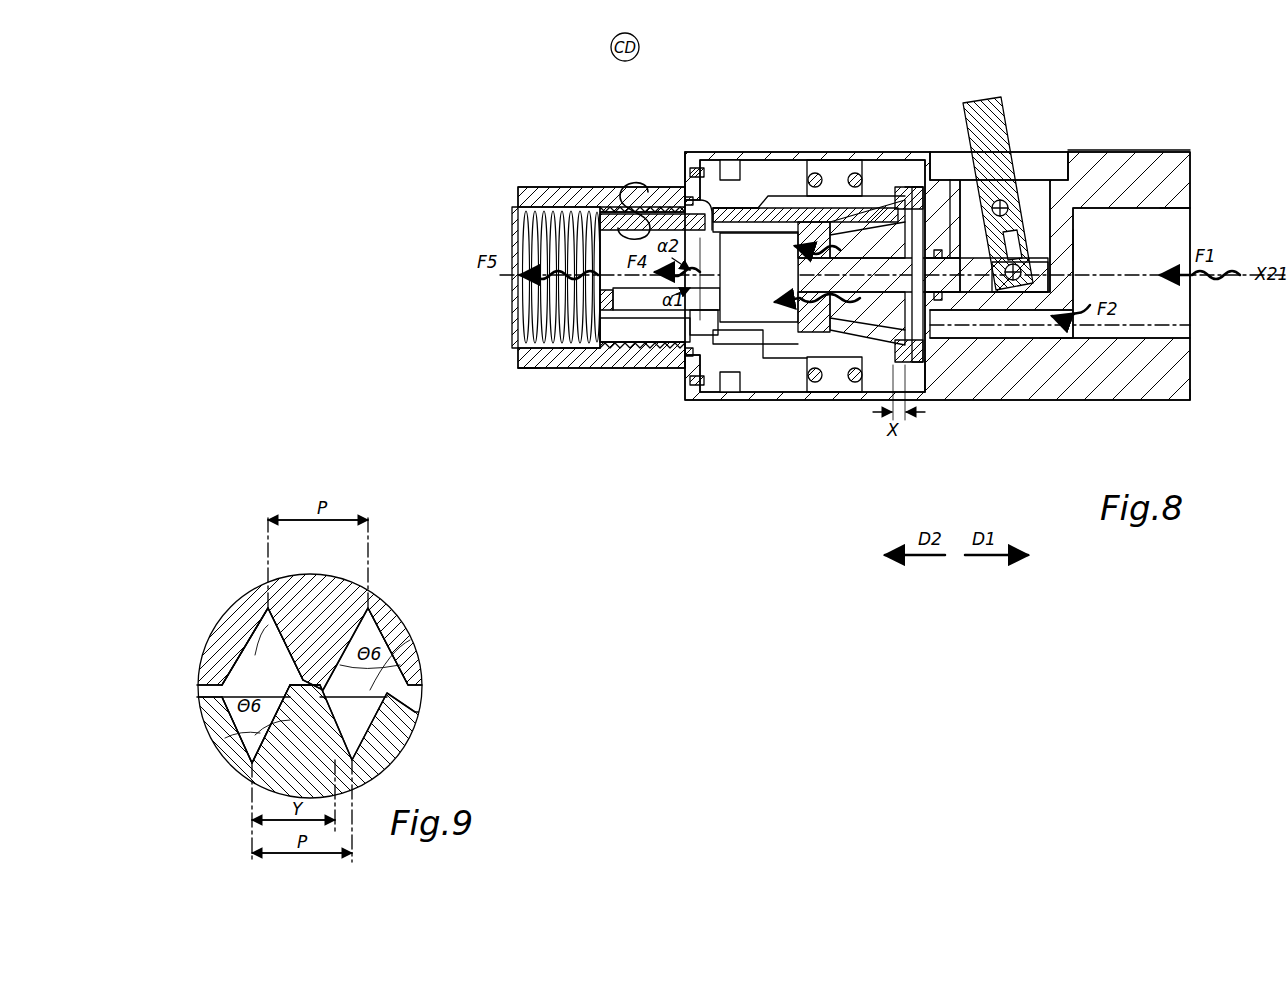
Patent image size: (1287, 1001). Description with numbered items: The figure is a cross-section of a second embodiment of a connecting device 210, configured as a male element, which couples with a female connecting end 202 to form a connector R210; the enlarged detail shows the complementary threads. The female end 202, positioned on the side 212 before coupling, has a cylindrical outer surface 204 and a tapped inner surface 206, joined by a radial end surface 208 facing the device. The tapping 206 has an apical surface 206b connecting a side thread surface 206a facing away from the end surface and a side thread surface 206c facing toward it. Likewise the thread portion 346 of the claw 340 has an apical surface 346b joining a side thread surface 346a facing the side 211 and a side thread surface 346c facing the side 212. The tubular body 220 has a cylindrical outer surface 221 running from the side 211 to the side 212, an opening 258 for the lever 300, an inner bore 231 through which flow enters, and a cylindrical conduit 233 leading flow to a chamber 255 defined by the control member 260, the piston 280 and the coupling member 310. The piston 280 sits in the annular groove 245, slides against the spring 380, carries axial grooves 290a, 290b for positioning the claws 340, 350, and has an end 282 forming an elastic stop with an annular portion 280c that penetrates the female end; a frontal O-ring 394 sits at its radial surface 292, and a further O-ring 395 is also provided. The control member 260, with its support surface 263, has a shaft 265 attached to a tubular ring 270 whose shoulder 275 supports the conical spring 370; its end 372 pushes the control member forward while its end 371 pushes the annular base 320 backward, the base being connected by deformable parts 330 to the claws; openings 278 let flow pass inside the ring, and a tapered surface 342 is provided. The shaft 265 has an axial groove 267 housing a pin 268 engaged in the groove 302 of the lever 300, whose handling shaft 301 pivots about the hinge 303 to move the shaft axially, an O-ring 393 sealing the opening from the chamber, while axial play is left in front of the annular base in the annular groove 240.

In FIG. 8, the female end 202 is at (478, 190).
In FIG. 9, the female end 202 is at (395, 612).
In FIG. 8, the cylindrical outer surface 204 is at (572, 372).
In FIG. 8, the tapped inner surface 206 is at (518, 330).
In FIG. 9, the tapped inner surface 206 is at (188, 655).
In FIG. 9, the side thread surface 206a is at (243, 632).
In FIG. 9, the apical surface 206b is at (392, 645).
In FIG. 9, the side thread surface 206c is at (240, 652).
In FIG. 8, the end surface 208 is at (690, 372).
In FIG. 8, the connecting device 210 is at (565, 110).
In FIG. 8, the connector R210 is at (450, 42).
In FIG. 8, the side 211 is at (1208, 418).
In FIG. 8, the side 212 is at (508, 376).
In FIG. 8, the tubular body 220 is at (1160, 150).
In FIG. 8, the cylindrical outer surface 221 is at (1112, 148).
In FIG. 8, the inner bore 231 is at (1172, 212).
In FIG. 8, the cylindrical conduit 233 is at (1046, 352).
In FIG. 8, the annular groove 240 is at (960, 300).
In FIG. 8, the annular groove 245 is at (733, 148).
In FIG. 8, the chamber 255 is at (948, 148).
In FIG. 8, the opening 258 is at (957, 148).
In FIG. 8, the control member 260 is at (970, 492).
In FIG. 8, the support surface 263 is at (765, 395).
In FIG. 8, the shaft 265 is at (925, 380).
In FIG. 8, the axial groove 267 is at (1073, 245).
In FIG. 8, the pin 268 is at (1080, 148).
In FIG. 8, the tubular ring 270 is at (790, 395).
In FIG. 8, the shoulder 275 is at (830, 392).
In FIG. 8, the openings 278 is at (875, 392).
In FIG. 8, the piston 280 is at (783, 150).
In FIG. 8, the annular portion 280c is at (612, 350).
In FIG. 8, the end 282 is at (650, 355).
In FIG. 8, the axial groove 290a is at (757, 150).
In FIG. 8, the axial groove 290b is at (600, 220).
In FIG. 8, the radial surface 292 is at (690, 178).
In FIG. 8, the lever 300 is at (1040, 149).
In FIG. 8, the handling shaft 301 is at (990, 110).
In FIG. 8, the groove 302 is at (1083, 148).
In FIG. 8, the hinge 303 is at (1052, 148).
In FIG. 8, the coupling member 310 is at (761, 107).
In FIG. 8, the annular base 320 is at (913, 150).
In FIG. 8, the deformable parts 330 is at (800, 150).
In FIG. 8, the claw 340 is at (678, 185).
In FIG. 9, the claw 340 is at (372, 740).
In FIG. 8, the tapered surface 342 is at (712, 200).
In FIG. 8, the thread portion 346 is at (625, 198).
In FIG. 9, the thread portion 346 is at (188, 733).
In FIG. 9, the side thread surface 346a is at (345, 690).
In FIG. 9, the apical surface 346b is at (316, 680).
In FIG. 9, the side thread surface 346c is at (262, 735).
In FIG. 8, the claw 350 is at (522, 338).
In FIG. 8, the spring 370 is at (850, 240).
In FIG. 8, the end 371 is at (872, 150).
In FIG. 8, the end 372 is at (829, 150).
In FIG. 8, the spring 380 is at (800, 150).
In FIG. 8, the O-ring 393 is at (952, 330).
In FIG. 8, the frontal O-ring 394 is at (702, 382).
In FIG. 8, the O-ring 395 is at (708, 400).